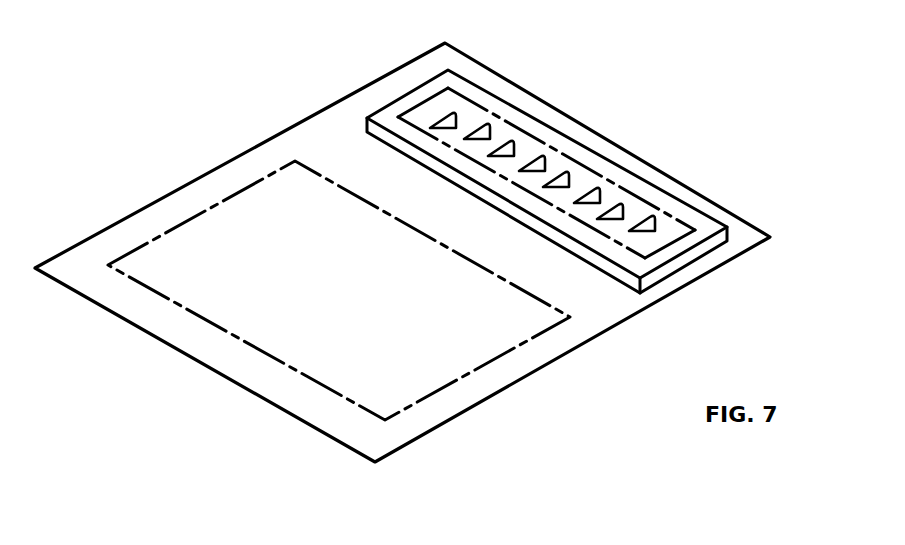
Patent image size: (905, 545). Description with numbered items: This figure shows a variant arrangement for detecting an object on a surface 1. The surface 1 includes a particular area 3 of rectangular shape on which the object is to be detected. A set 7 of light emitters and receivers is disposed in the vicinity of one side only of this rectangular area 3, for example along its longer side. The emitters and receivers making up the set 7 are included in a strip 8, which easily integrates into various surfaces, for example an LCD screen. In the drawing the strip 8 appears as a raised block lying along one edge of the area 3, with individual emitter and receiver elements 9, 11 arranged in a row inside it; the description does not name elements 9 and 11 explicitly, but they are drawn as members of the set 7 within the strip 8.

The surface 1 is at (125, 238).
The particular area 3 is at (478, 282).
The set of emitters and receivers 7 is at (520, 132).
The strip 8 is at (673, 196).
The contact terminal 9 is at (443, 118).
The contact terminal 11 is at (480, 125).